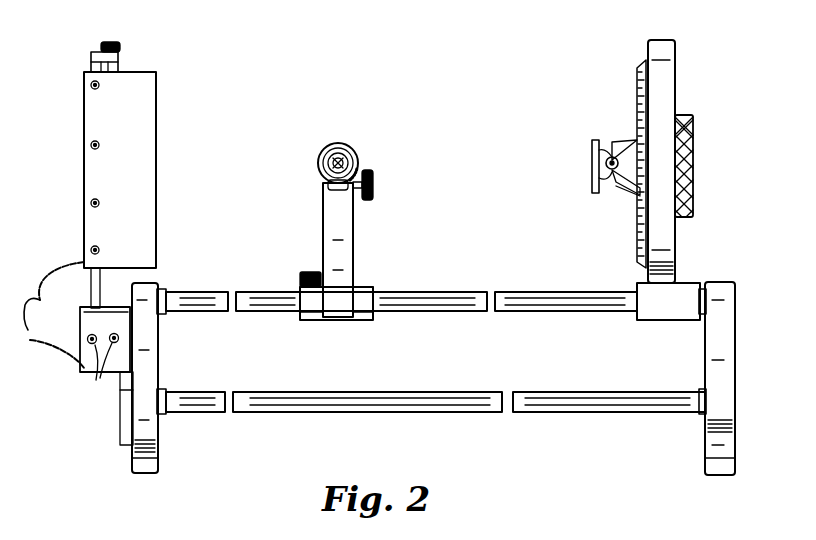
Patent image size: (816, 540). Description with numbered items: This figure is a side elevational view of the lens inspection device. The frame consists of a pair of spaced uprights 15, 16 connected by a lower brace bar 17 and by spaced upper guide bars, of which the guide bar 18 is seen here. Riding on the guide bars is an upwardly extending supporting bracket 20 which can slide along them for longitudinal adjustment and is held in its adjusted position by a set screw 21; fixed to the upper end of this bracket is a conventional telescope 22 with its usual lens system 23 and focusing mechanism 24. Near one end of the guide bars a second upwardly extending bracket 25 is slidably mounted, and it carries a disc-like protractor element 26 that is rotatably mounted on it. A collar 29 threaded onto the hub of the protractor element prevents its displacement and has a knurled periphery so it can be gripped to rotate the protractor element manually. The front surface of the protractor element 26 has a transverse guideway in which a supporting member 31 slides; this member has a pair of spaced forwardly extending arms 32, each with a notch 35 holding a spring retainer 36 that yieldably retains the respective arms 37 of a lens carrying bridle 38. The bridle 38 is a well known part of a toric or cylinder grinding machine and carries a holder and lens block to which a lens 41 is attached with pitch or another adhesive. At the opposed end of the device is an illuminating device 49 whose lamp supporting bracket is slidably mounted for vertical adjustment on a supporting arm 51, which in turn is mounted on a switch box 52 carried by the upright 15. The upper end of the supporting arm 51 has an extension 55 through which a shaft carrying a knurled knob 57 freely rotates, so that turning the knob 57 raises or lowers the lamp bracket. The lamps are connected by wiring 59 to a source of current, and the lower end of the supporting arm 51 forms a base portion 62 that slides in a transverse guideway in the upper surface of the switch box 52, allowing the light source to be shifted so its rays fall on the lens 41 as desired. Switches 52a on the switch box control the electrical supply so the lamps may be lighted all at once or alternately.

The upright 15 is at (156, 362).
The upright 16 is at (716, 355).
The lower brace bar 17 is at (420, 397).
The upper guide bar 18 is at (426, 297).
The supporting bracket 20 is at (345, 254).
The set screw 21 is at (306, 277).
The telescope 22 is at (354, 151).
The lens system 23 is at (330, 157).
The focusing mechanism 24 is at (374, 186).
The bracket 25 is at (666, 106).
The protractor element 26 is at (641, 68).
The collar 29 is at (694, 173).
The supporting member 31 is at (638, 198).
The forwardly extending arm 32 is at (620, 192).
The notch 35 is at (607, 166).
The spring retainer 36 is at (608, 150).
The bridle arm 37 is at (606, 188).
The lens carrying bridle 38 is at (622, 135).
The lens 41 is at (592, 150).
The illuminating device 49 is at (142, 107).
The supporting arm 51 is at (96, 288).
The switch box 52 is at (85, 366).
The switch 52a is at (112, 345).
The extension 55 is at (120, 61).
The knurled knob 57 is at (113, 44).
The wiring 59 is at (46, 315).
The base portion 62 is at (101, 308).